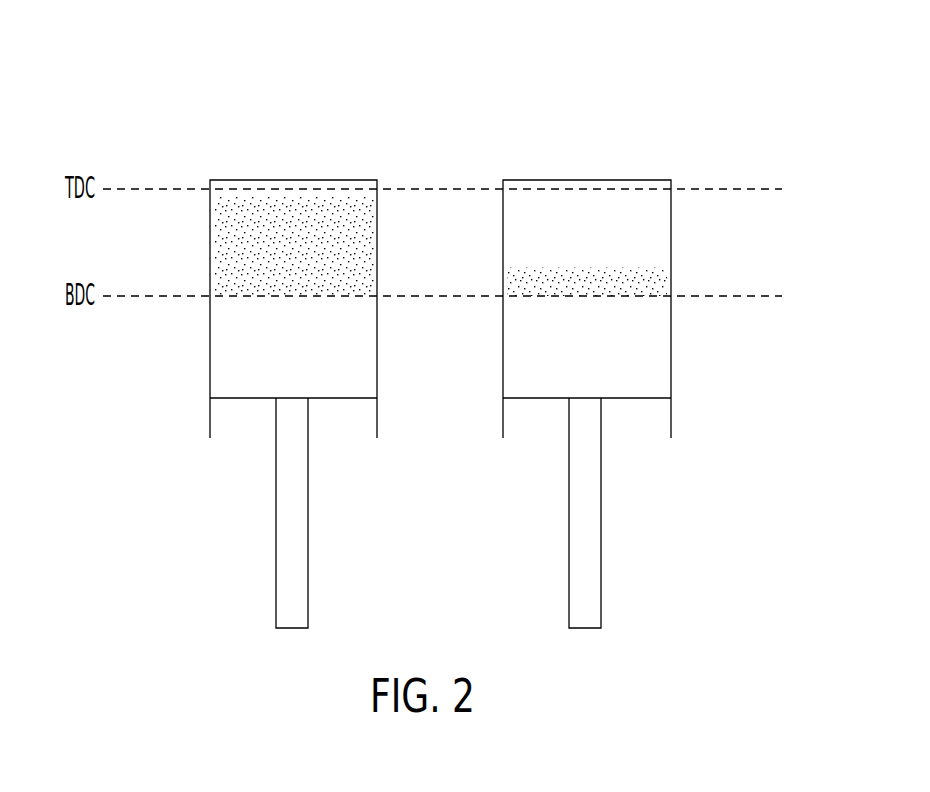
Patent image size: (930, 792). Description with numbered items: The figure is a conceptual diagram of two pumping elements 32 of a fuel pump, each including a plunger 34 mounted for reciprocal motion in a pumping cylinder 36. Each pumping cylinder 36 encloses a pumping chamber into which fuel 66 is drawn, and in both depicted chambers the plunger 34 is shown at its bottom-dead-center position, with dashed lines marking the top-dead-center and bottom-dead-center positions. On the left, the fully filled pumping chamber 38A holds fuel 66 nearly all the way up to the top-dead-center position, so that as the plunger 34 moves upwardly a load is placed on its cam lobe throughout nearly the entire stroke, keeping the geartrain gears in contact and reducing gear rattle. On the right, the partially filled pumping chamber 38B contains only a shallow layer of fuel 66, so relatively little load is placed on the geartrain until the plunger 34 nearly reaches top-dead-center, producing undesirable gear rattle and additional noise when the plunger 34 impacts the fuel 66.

The pumping element 32 is at (202, 101).
The plunger 34 is at (220, 370).
The pumping cylinder 36 is at (210, 314).
The fully filled pumping chamber 38A is at (301, 207).
The partially filled pumping chamber 38B is at (640, 207).
The fuel 66 is at (219, 258).